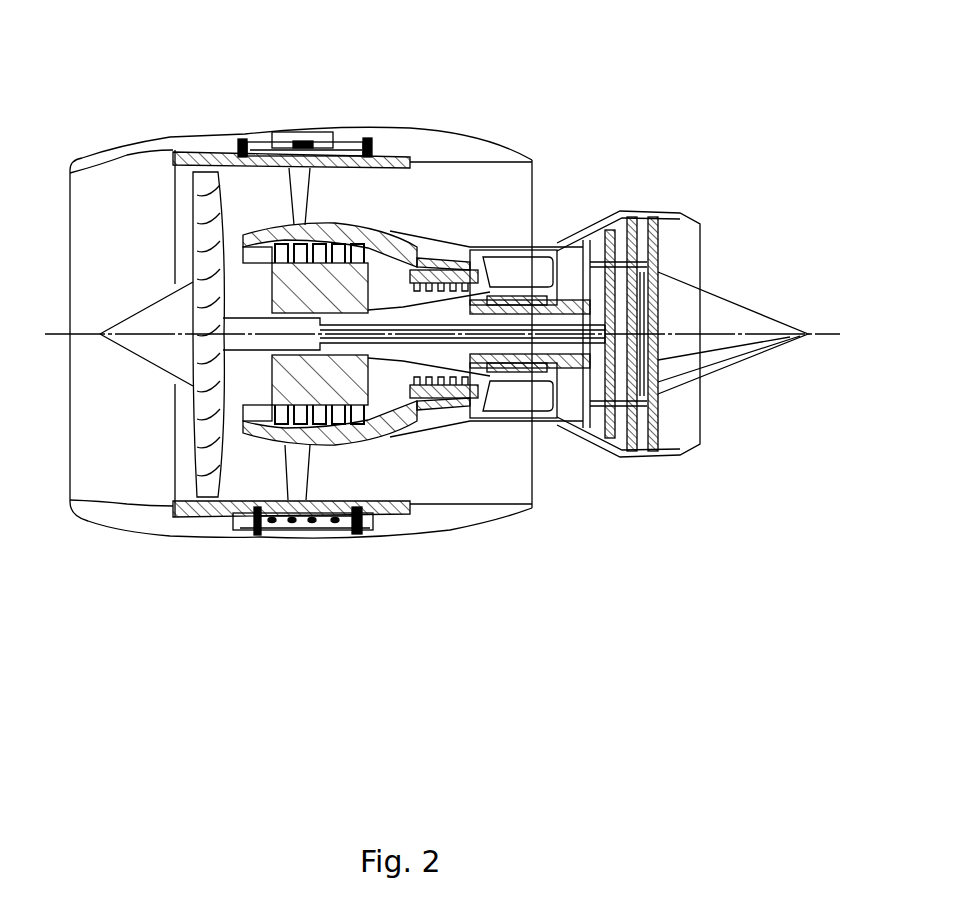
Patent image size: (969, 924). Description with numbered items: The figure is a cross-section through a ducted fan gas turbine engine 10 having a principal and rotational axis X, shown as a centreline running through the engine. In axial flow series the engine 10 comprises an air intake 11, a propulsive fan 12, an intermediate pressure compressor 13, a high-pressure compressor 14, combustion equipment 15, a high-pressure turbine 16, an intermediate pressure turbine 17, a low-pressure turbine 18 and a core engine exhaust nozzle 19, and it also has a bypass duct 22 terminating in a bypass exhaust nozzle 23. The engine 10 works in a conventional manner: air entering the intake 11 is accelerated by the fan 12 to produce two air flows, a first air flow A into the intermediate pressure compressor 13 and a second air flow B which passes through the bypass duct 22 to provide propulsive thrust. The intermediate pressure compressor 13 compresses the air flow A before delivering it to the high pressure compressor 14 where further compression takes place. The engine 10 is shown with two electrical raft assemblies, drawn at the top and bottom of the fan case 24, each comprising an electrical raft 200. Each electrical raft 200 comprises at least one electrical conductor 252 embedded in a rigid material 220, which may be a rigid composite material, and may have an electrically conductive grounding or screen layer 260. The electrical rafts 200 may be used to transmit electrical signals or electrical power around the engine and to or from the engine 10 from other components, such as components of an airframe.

The ducted fan gas turbine engine 10 is at (143, 110).
The air intake 11 is at (118, 172).
The propulsive fan 12 is at (193, 448).
The intermediate pressure compressor 13 is at (337, 440).
The high-pressure compressor 14 is at (437, 258).
The combustion equipment 15 is at (470, 418).
The high-pressure turbine 16 is at (547, 420).
The intermediate pressure turbine 17 is at (583, 228).
The low-pressure turbine 18 is at (603, 443).
The core engine exhaust nozzle 19 is at (693, 218).
The bypass duct 22 is at (501, 199).
The bypass exhaust nozzle 23 is at (535, 158).
The fan case 24 is at (184, 150).
The electrical raft 200 is at (342, 52).
The rigid material 220 is at (233, 147).
The electrical conductor 252 is at (260, 150).
The electrically conductive grounding or screen layer 260 is at (233, 535).
The first air flow A is at (243, 251).
The second air flow B is at (262, 198).
The principal and rotational axis X is at (446, 335).